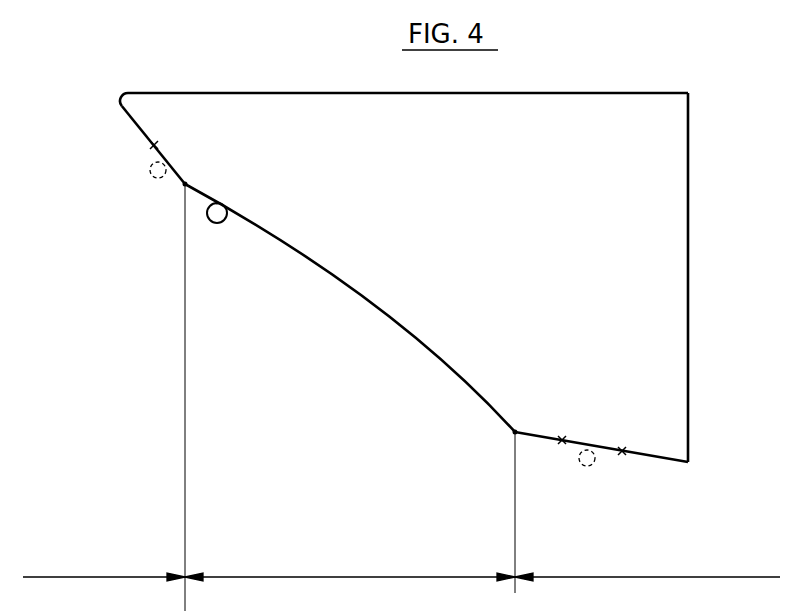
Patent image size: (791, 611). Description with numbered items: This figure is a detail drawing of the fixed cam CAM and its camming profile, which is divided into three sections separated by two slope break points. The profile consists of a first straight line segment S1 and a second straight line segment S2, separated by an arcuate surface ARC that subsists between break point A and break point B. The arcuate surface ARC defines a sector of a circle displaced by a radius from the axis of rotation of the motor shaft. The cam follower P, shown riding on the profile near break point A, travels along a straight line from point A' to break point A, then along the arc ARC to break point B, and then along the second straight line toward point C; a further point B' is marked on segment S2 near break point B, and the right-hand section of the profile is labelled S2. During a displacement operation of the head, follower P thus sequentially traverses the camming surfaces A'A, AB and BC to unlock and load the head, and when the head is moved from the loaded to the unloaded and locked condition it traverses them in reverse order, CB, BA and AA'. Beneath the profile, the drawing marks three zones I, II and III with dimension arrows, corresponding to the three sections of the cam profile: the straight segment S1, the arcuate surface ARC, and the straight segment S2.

The straight line segment S1 is at (133, 128).
The point A' is at (161, 150).
The break point A is at (176, 195).
The cam CAM is at (215, 222).
The cam follower P is at (219, 204).
The arcuate surface ARC is at (385, 313).
The break point B is at (522, 421).
The point following corner B on segment S2 B' is at (576, 438).
The point C is at (623, 439).
The straight line segment S2 is at (665, 462).
The zone I is at (129, 521).
The zone II is at (350, 538).
The zone III is at (729, 521).